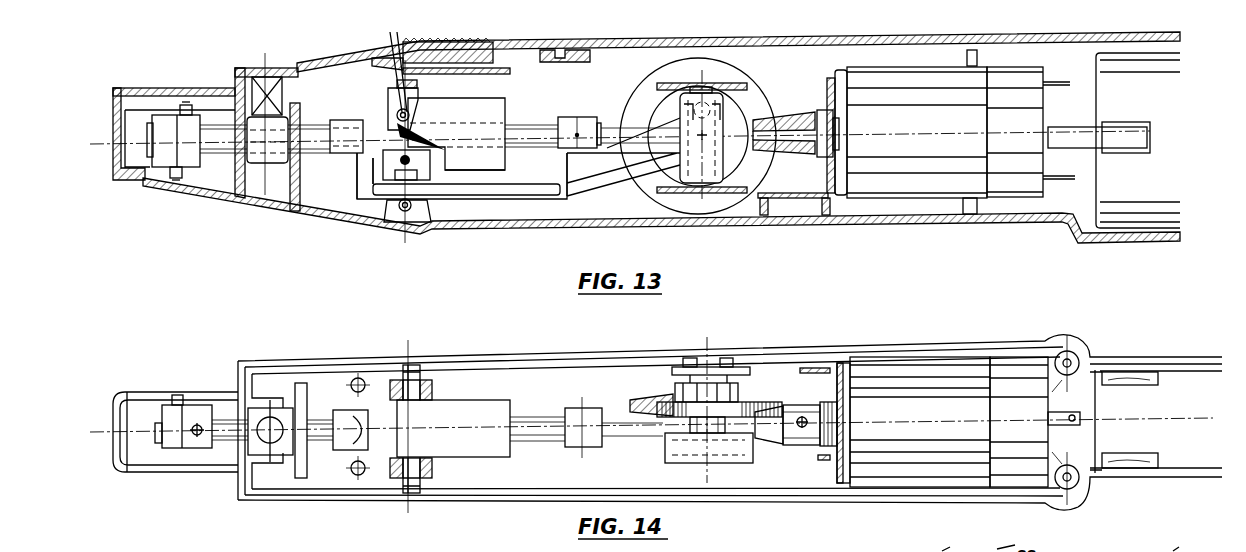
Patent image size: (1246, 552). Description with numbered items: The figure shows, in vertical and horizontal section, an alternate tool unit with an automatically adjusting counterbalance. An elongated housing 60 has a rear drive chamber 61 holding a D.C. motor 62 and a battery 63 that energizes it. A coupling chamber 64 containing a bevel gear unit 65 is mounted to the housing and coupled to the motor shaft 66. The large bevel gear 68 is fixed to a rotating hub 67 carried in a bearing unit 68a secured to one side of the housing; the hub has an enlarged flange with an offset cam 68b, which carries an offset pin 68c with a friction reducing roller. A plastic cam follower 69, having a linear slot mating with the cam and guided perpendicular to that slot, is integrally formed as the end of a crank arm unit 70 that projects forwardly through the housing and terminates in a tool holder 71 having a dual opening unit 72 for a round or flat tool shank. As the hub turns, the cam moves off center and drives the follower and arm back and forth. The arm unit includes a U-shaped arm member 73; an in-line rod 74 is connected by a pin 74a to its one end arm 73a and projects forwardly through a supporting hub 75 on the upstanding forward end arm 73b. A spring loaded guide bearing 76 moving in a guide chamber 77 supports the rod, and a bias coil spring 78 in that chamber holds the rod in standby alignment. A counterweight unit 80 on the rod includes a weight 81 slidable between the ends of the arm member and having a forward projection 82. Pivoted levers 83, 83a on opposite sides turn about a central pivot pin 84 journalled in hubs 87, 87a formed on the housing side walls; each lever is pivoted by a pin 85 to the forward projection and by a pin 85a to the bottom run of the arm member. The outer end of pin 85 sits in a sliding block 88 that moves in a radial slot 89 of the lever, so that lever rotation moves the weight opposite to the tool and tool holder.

In FIG. 13, the elongated housing 60 is at (697, 229).
In FIG. 14, the elongated housing 60 is at (944, 347).
In FIG. 13, the rear drive chamber 61 is at (1079, 117).
In FIG. 14, the rear drive chamber 61 is at (1084, 406).
In FIG. 13, the D.C. motor 62 is at (924, 175).
In FIG. 14, the D.C. motor 62 is at (918, 440).
In FIG. 13, the battery 63 is at (1150, 176).
In FIG. 14, the battery 63 is at (1143, 438).
In FIG. 13, the coupling chamber 64 is at (826, 87).
In FIG. 13, the bevel gear unit 65 is at (780, 110).
In FIG. 13, the motor shaft 66 is at (808, 153).
In FIG. 14, the rotating hub 67 is at (672, 390).
In FIG. 13, the large bevel gear 68 is at (660, 71).
In FIG. 14, the large bevel gear 68 is at (632, 403).
In FIG. 14, the bearing unit 68a is at (764, 334).
In FIG. 13, the cam 68b is at (688, 83).
In FIG. 13, the offset pin 68c is at (707, 102).
In FIG. 13, the cam follower 69 is at (757, 102).
In FIG. 13, the crank arm unit 70 is at (585, 200).
In FIG. 13, the tool holder 71 is at (170, 116).
In FIG. 14, the tool holder 71 is at (191, 404).
In FIG. 13, the dual opening unit 72 is at (150, 143).
In FIG. 14, the dual opening unit 72 is at (158, 433).
In FIG. 13, the U-shaped arm member 73 is at (510, 201).
In FIG. 13, the one end arm 73a is at (582, 114).
In FIG. 13, the upstanding forward end arm 73b is at (352, 157).
In FIG. 13, the in-line rod 74 is at (512, 124).
In FIG. 14, the in-line rod 74 is at (534, 441).
In FIG. 13, the pin 74a is at (576, 134).
In FIG. 13, the supporting hub 75 is at (332, 118).
In FIG. 13, the spring loaded guide bearing 76 is at (288, 194).
In FIG. 13, the guide chamber 77 is at (282, 189).
In FIG. 13, the bias coil spring 78 is at (287, 97).
In FIG. 13, the counterweight unit 80 is at (497, 96).
In FIG. 13, the weight 81 is at (507, 168).
In FIG. 13, the forward projection 82 is at (398, 114).
In FIG. 14, the pivoted lever 83 is at (431, 381).
In FIG. 14, the pivoted lever 83a is at (392, 467).
In FIG. 13, the central pivot pin 84 is at (418, 165).
In FIG. 13, the pin 85 is at (412, 115).
In FIG. 13, the pin 85a is at (392, 215).
In FIG. 14, the hub 87 is at (390, 376).
In FIG. 14, the hub 87a is at (434, 490).
In FIG. 13, the sliding block 88 is at (390, 65).
In FIG. 13, the radial slot 89 is at (392, 32).